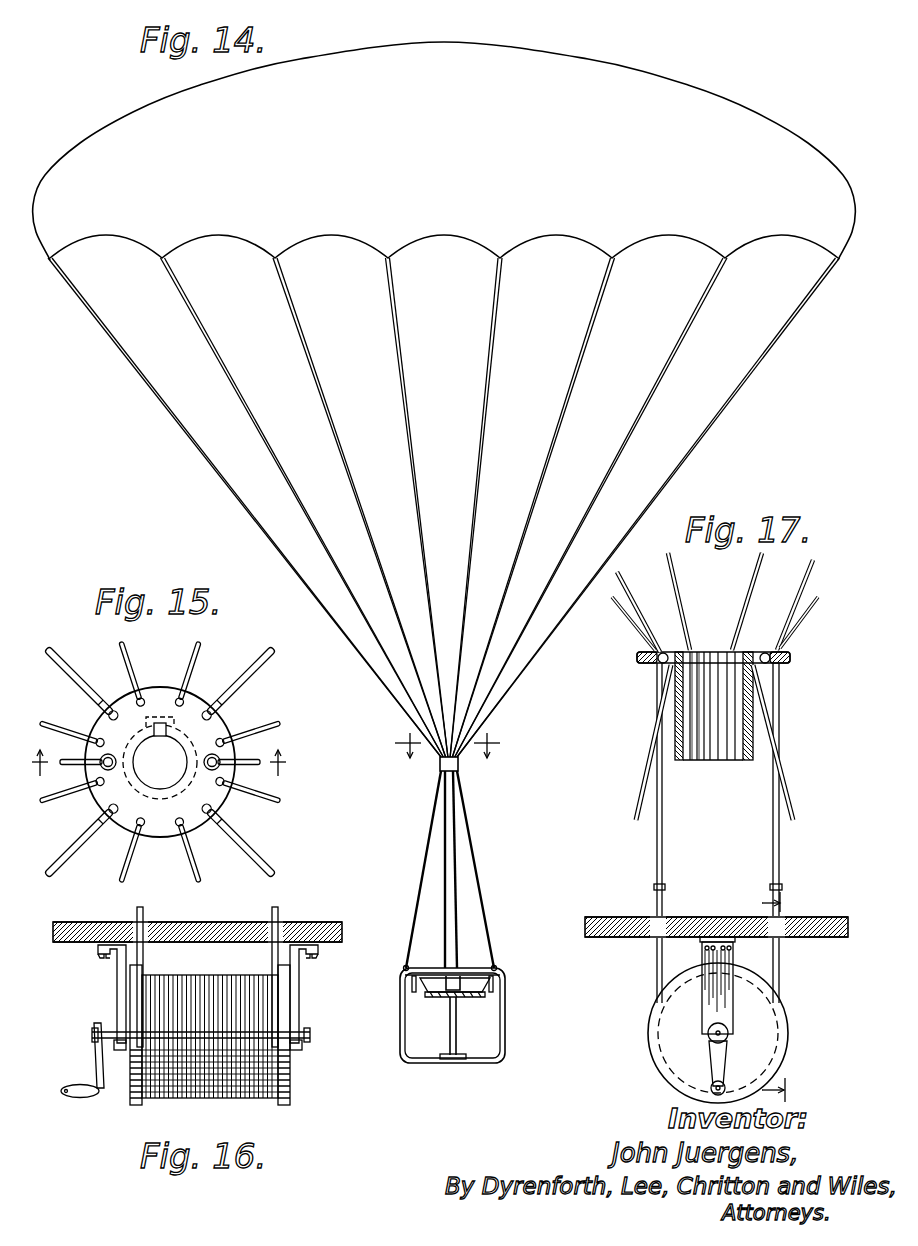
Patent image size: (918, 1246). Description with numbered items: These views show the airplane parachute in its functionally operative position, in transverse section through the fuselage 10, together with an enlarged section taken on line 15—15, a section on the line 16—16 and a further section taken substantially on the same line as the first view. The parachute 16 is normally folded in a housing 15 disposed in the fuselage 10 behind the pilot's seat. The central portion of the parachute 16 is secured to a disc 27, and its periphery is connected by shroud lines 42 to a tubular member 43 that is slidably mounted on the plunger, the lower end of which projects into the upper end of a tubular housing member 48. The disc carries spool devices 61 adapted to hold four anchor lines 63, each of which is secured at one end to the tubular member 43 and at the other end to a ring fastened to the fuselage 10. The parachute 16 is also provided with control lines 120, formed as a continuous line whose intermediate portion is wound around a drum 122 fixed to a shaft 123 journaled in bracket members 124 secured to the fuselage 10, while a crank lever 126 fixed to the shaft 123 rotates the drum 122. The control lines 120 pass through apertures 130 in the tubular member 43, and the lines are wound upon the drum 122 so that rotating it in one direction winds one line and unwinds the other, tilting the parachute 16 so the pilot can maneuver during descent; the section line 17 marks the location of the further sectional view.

In FIG. 14, the fuselage 10 is at (506, 1003).
In FIG. 16, the fuselage 10 is at (313, 922).
In FIG. 17, the fuselage 10 is at (720, 922).
In FIG. 14, the housing 15 is at (470, 976).
In FIG. 14, the parachute 16 is at (742, 120).
In FIG. 17, the parachute 16 is at (788, 997).
In FIG. 15, the section line 17- 17 is at (168, 769).
In FIG. 14, the disc 27 is at (459, 766).
In FIG. 14, the shroud lines 42 is at (630, 430).
In FIG. 15, the shroud lines 42 is at (193, 657).
In FIG. 17, the shroud lines 42 is at (620, 576).
In FIG. 15, the tubular member 43 is at (193, 704).
In FIG. 17, the tubular member 43 is at (790, 661).
In FIG. 14, the tubular housing member 48 is at (457, 1042).
In FIG. 14, the spool devices 61 is at (476, 995).
In FIG. 14, the anchor lines 63 is at (427, 858).
In FIG. 15, the anchor lines 63 is at (80, 661).
In FIG. 17, the anchor lines 63 is at (634, 807).
In FIG. 14, the control lines 120 is at (185, 440).
In FIG. 15, the control lines 120 is at (250, 763).
In FIG. 17, the control lines 120 is at (617, 604).
In FIG. 16, the drum 122 is at (291, 1090).
In FIG. 17, the drum 122 is at (668, 1071).
In FIG. 16, the shaft 123 is at (311, 1036).
In FIG. 16, the bracket members 124 is at (117, 979).
In FIG. 17, the bracket members 124 is at (722, 1007).
In FIG. 16, the crank lever 126 is at (95, 1066).
In FIG. 17, the crank lever 126 is at (725, 1061).
In FIG. 15, the apertures 130 is at (160, 758).
In FIG. 17, the apertures 130 is at (663, 652).